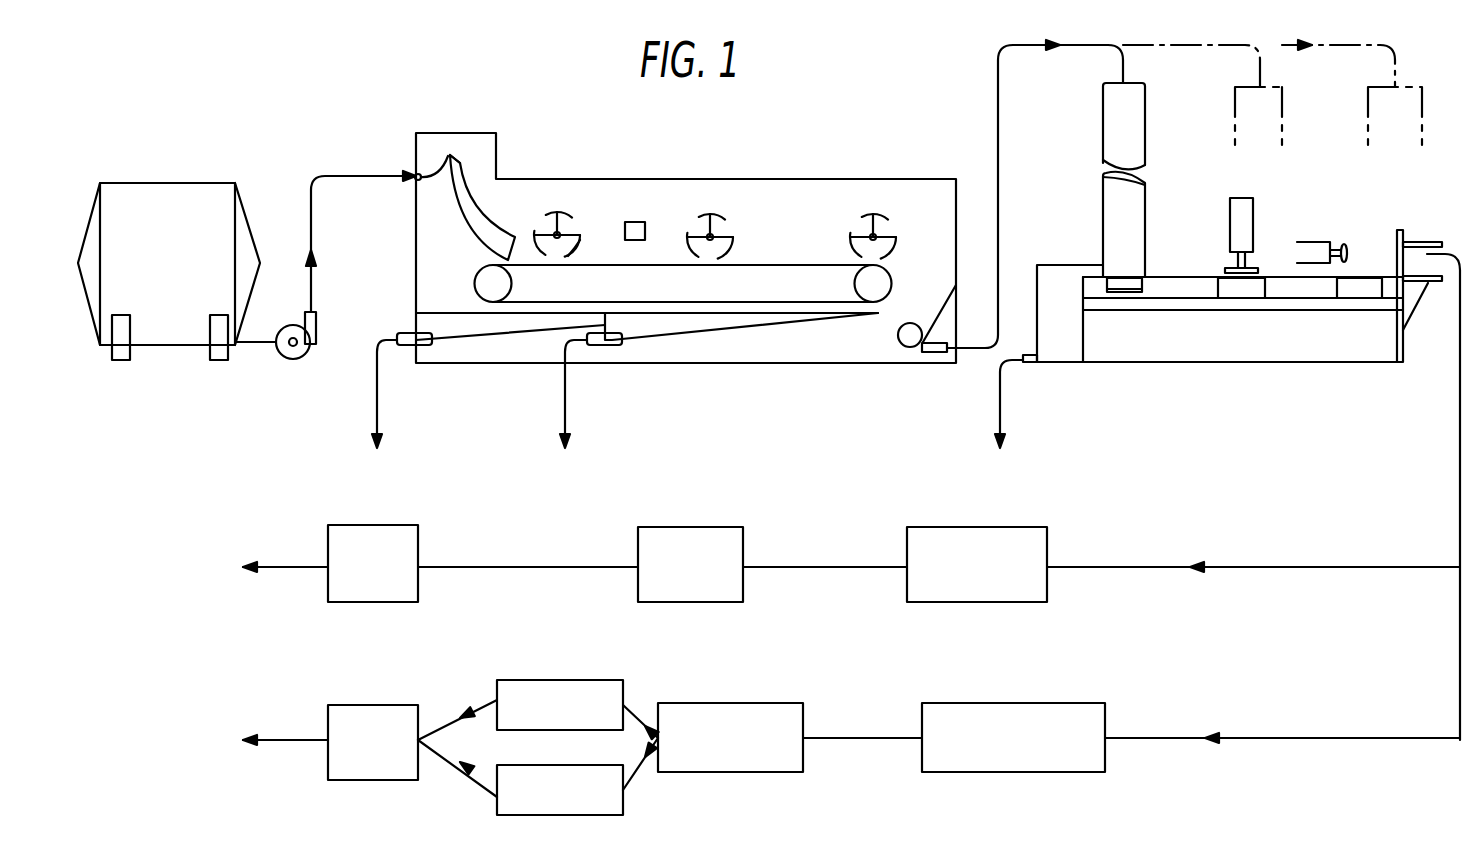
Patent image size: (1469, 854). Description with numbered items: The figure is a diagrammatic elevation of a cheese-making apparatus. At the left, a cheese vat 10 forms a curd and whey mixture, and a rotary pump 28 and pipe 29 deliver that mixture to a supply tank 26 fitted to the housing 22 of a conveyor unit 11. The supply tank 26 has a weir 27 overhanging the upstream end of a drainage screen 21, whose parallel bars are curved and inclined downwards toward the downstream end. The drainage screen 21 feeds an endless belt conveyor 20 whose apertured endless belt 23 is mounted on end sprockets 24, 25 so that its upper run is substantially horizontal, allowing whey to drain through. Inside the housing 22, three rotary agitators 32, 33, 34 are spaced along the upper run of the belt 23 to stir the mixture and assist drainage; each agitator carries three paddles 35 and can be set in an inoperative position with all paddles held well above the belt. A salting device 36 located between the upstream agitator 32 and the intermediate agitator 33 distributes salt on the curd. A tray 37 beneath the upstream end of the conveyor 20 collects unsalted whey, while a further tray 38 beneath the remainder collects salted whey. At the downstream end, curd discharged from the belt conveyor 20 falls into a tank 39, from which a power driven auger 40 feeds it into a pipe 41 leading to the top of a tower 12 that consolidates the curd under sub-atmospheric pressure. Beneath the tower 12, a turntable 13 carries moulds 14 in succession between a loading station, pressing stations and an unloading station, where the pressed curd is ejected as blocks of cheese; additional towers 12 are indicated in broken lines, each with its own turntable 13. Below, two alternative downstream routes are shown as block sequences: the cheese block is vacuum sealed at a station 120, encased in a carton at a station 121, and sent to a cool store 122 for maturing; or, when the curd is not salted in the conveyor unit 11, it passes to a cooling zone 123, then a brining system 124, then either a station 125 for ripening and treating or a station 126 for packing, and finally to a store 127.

The cheese vat 10 is at (210, 172).
The conveyor unit 11 is at (686, 236).
The tower 12 is at (1148, 137).
The turntable 13 is at (1295, 372).
The moulds 14 is at (1220, 287).
The endless belt conveyor 20 is at (651, 220).
The drainage screen 21 is at (473, 185).
The housing 22 is at (891, 180).
The endless belt 23 is at (806, 263).
The end sprocket 24 is at (474, 283).
The end sprocket 25 is at (892, 279).
The supply tank 26 is at (437, 168).
The weir 27 is at (455, 152).
The rotary pump 28 is at (298, 359).
The pipe 29 is at (371, 175).
The upstream rotary agitator 32 is at (576, 218).
The intermediate rotary agitator 33 is at (731, 222).
The rotary agitator 34 is at (894, 222).
The paddles 35 is at (581, 245).
The salting device 36 is at (646, 222).
The tray 37 is at (483, 340).
The further tray 38 is at (693, 338).
The tank 39 is at (925, 330).
The power driven auger 40 is at (909, 342).
The pipe 41 is at (1001, 134).
The station 120 is at (945, 579).
The station 121 is at (668, 579).
The cool store 122 is at (351, 579).
The cooling zone 123 is at (988, 752).
The brining system 124 is at (708, 752).
The station 125 is at (535, 720).
The station 126 is at (535, 805).
The store 127 is at (351, 758).